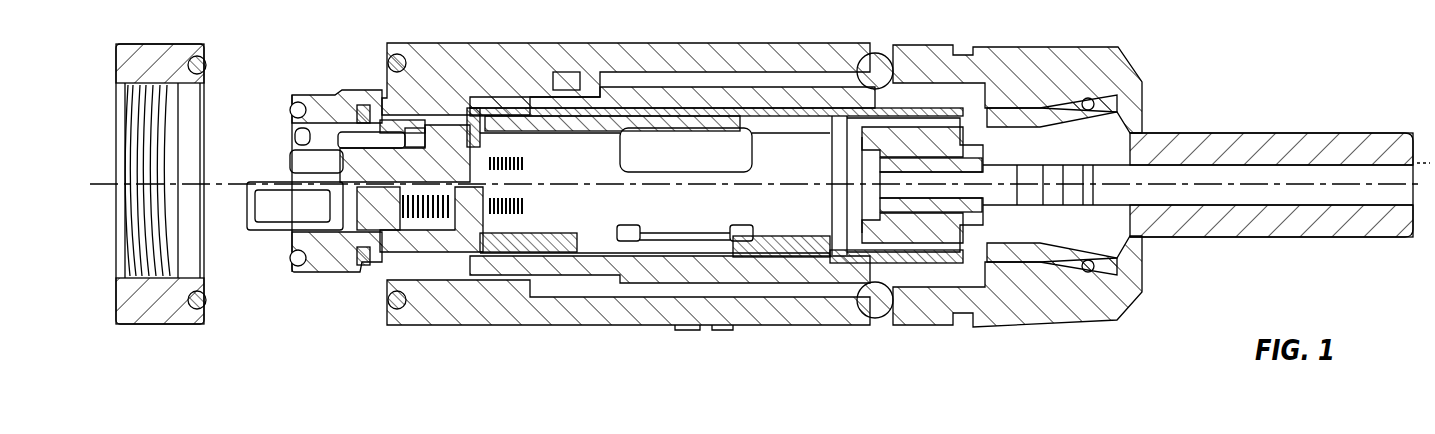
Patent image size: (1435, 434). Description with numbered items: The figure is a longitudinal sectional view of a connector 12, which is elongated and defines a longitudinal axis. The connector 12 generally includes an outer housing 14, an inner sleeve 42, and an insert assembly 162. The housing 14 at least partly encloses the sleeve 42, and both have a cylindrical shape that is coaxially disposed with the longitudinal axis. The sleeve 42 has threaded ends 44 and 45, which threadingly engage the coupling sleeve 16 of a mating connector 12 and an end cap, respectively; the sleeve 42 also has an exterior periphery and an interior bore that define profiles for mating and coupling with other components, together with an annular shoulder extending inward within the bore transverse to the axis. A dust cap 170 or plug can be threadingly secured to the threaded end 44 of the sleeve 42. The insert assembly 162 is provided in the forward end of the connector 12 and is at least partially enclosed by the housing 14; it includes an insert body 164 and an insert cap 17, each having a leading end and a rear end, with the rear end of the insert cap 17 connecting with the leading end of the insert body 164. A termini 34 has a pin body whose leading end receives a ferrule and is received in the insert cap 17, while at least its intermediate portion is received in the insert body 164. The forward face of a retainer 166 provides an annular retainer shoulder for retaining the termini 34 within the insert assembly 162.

The dust cap 170 is at (152, 44).
The threaded end 44 is at (338, 92).
The coupling sleeve 16 is at (453, 57).
The inner sleeve 42 is at (522, 88).
The outer housing 14 is at (918, 45).
The threaded end 45 is at (988, 93).
The termini 34 is at (300, 160).
The retainer 166 is at (512, 148).
The insert cap 17 is at (263, 235).
The insert assembly 162 is at (290, 255).
The insert body 164 is at (387, 243).
The connector 12 is at (430, 326).